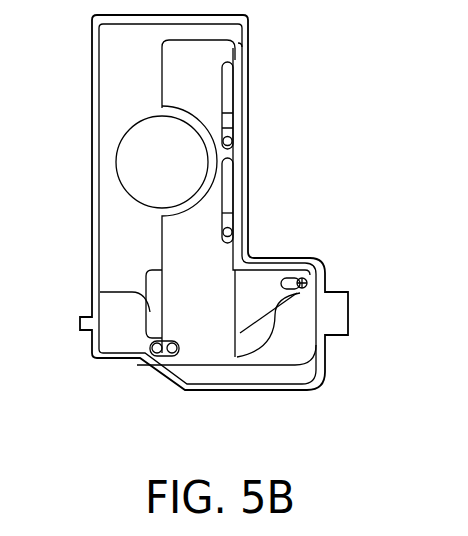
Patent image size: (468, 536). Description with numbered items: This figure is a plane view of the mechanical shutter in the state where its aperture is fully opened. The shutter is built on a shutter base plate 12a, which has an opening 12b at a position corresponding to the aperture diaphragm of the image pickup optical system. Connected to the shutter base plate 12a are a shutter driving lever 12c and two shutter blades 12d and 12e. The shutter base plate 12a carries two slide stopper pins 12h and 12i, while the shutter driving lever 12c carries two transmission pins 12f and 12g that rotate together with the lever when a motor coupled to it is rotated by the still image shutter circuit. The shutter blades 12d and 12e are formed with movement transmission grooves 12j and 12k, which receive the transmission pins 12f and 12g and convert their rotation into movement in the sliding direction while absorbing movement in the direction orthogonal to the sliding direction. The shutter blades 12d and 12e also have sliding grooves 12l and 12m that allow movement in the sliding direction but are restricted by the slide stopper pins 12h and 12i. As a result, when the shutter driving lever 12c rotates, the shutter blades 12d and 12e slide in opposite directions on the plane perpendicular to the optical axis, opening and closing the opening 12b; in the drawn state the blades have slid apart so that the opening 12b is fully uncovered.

The shutter base plate 12a is at (227, 32).
The opening 12b is at (133, 133).
The shutter driving lever 12c is at (255, 312).
The shutter blade 12d is at (177, 237).
The shutter blade 12e is at (188, 83).
The transmission pin 12f is at (300, 273).
The transmission pin 12g is at (168, 355).
The slide stopper pin 12h is at (228, 232).
The slide stopper pin 12i is at (228, 140).
The movement transmission groove 12j is at (305, 282).
The movement transmission groove 12k is at (155, 352).
The sliding groove 12l is at (227, 197).
The sliding groove 12m is at (227, 85).